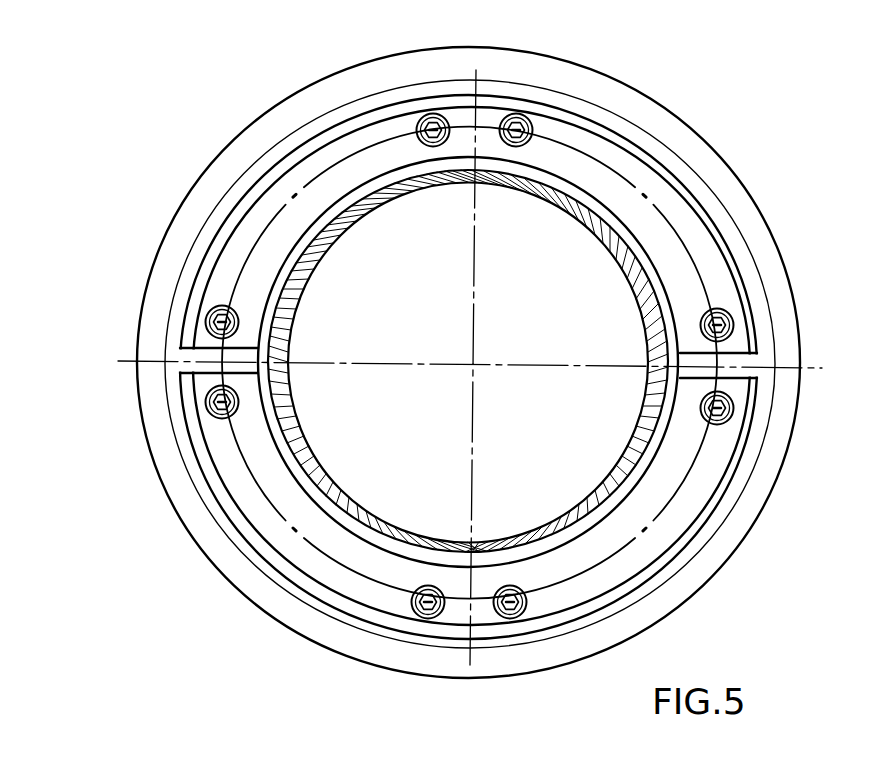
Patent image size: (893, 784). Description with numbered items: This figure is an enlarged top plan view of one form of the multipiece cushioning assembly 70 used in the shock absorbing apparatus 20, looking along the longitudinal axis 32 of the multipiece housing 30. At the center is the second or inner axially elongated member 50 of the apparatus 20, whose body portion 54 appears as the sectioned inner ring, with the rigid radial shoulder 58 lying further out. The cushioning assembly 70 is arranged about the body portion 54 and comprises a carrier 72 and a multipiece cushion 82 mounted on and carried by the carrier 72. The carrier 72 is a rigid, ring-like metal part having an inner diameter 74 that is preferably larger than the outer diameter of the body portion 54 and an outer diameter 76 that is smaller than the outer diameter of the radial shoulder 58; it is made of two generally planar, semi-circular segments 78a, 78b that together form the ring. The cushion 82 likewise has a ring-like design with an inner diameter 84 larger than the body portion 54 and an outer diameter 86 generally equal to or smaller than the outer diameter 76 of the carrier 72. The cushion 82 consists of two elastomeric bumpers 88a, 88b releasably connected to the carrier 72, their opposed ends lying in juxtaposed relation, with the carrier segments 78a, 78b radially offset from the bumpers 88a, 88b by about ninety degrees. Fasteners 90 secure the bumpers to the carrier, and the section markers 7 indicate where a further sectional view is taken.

The shock absorbing apparatus 20 is at (178, 153).
The multipiece housing 30 is at (731, 592).
The longitudinal axis 32 is at (469, 366).
The second or inner axially elongated member 50 is at (412, 501).
The body portion 54 is at (557, 525).
The rigid radial shoulder 58 is at (760, 498).
The cushioning assembly 70 is at (707, 166).
The carrier 72 is at (175, 460).
The inner diameter of carrier 74 is at (297, 274).
The outer diameter of carrier 76 is at (652, 598).
The carrier segment 78a is at (342, 615).
The carrier segment 78b is at (566, 635).
The multipiece cushion 82 is at (208, 230).
The inner diameter of cushion 84 is at (621, 230).
The outer diameter of cushion 86 is at (610, 126).
The elastomeric bumper 88a is at (302, 553).
The elastomeric bumper 88b is at (692, 228).
The fasteners 90 is at (510, 113).
The section line 7- 7 is at (637, 331).